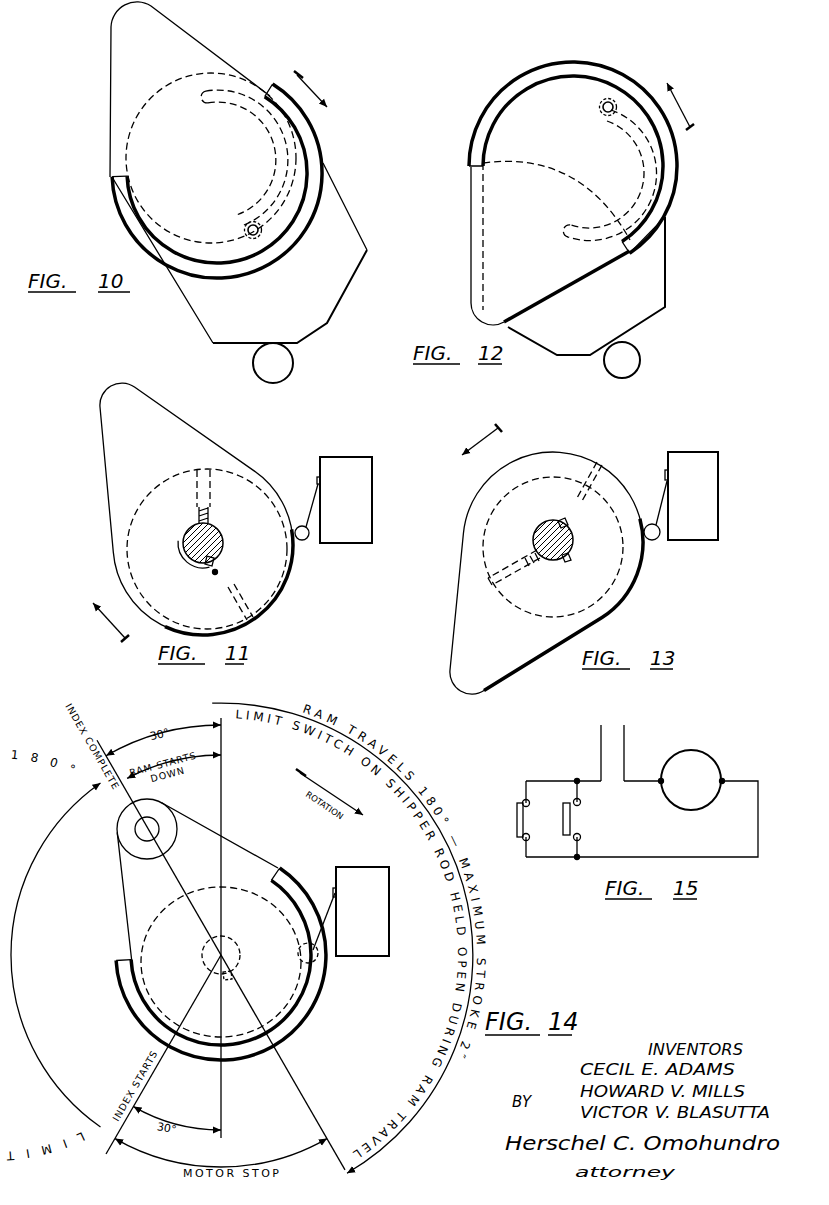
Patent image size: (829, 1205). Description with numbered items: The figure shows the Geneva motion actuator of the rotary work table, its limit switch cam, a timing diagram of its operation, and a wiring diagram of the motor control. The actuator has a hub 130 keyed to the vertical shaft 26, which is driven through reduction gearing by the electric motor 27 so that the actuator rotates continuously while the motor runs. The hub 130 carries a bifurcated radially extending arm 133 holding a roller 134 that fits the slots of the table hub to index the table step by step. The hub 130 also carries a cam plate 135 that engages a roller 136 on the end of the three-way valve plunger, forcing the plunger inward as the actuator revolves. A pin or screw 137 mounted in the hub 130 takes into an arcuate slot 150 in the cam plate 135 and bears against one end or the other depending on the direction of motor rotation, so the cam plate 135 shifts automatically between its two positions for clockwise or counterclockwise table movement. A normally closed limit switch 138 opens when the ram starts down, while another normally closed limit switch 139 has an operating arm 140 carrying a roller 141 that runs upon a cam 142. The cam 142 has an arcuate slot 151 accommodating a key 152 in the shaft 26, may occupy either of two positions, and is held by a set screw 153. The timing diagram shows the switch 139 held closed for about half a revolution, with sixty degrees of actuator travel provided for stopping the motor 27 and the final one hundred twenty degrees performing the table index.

In FIG. 11, the vertical shaft 26 is at (222, 536).
In FIG. 13, the vertical shaft 26 is at (549, 527).
In FIG. 14, the vertical shaft 26 is at (234, 958).
In FIG. 15, the electric motor 27 is at (712, 768).
In FIG. 10, the hub 130 is at (190, 215).
In FIG. 12, the hub 130 is at (553, 148).
In FIG. 10, the bifurcated radially extending arm 133 is at (225, 72).
In FIG. 12, the bifurcated radially extending arm 133 is at (545, 300).
In FIG. 11, the bifurcated radially extending arm 133 is at (193, 512).
In FIG. 13, the bifurcated radially extending arm 133 is at (462, 620).
In FIG. 14, the bifurcated radially extending arm 133 is at (238, 860).
In FIG. 14, the roller 134 is at (176, 822).
In FIG. 10, the cam plate 135 is at (338, 283).
In FIG. 12, the cam plate 135 is at (655, 263).
In FIG. 10, the roller 136 is at (290, 368).
In FIG. 12, the roller 136 is at (633, 351).
In FIG. 10, the pin or screw 137 is at (254, 224).
In FIG. 12, the pin or screw 137 is at (603, 105).
In FIG. 15, the normally closed limit switch 138 is at (522, 806).
In FIG. 11, the normally closed limit switch 139 is at (363, 521).
In FIG. 13, the normally closed limit switch 139 is at (713, 510).
In FIG. 14, the normally closed limit switch 139 is at (384, 932).
In FIG. 15, the normally closed limit switch 139 is at (565, 800).
In FIG. 13, the operating arm 140 is at (662, 493).
In FIG. 14, the operating arm 140 is at (324, 907).
In FIG. 11, the roller 141 is at (303, 541).
In FIG. 13, the roller 141 is at (656, 541).
In FIG. 14, the roller 141 is at (317, 961).
In FIG. 11, the cam 142 is at (138, 507).
In FIG. 13, the cam 142 is at (607, 594).
In FIG. 14, the cam 142 is at (179, 918).
In FIG. 10, the arcuate slot 150 is at (278, 167).
In FIG. 12, the arcuate slot 150 is at (633, 183).
In FIG. 11, the arcuate slot 151 is at (198, 568).
In FIG. 13, the arcuate slot 151 is at (566, 558).
In FIG. 11, the key 152 is at (215, 565).
In FIG. 11, the set screw 153 is at (210, 505).
In FIG. 13, the set screw 153 is at (492, 572).